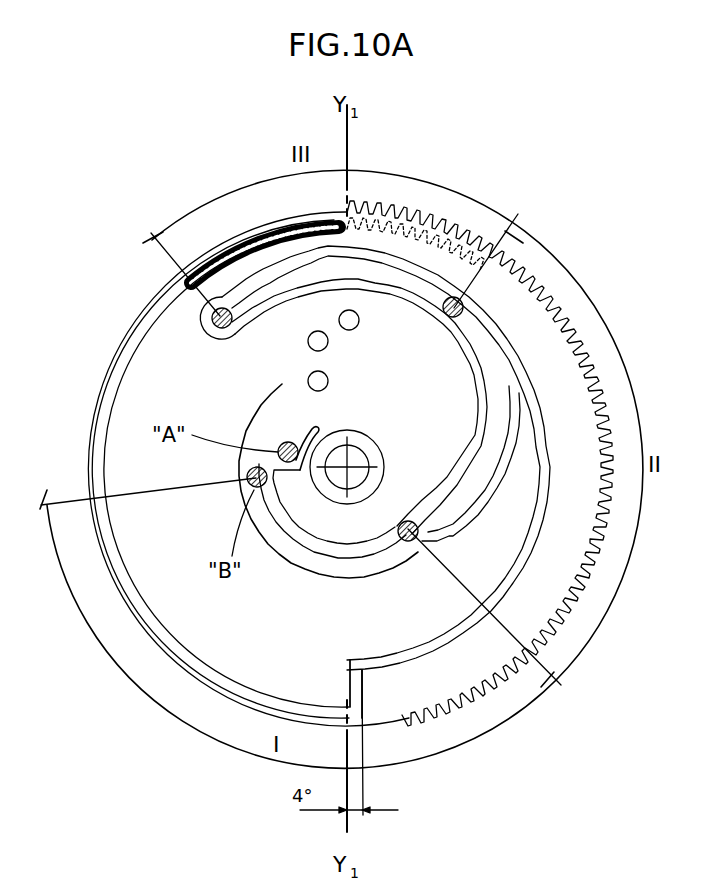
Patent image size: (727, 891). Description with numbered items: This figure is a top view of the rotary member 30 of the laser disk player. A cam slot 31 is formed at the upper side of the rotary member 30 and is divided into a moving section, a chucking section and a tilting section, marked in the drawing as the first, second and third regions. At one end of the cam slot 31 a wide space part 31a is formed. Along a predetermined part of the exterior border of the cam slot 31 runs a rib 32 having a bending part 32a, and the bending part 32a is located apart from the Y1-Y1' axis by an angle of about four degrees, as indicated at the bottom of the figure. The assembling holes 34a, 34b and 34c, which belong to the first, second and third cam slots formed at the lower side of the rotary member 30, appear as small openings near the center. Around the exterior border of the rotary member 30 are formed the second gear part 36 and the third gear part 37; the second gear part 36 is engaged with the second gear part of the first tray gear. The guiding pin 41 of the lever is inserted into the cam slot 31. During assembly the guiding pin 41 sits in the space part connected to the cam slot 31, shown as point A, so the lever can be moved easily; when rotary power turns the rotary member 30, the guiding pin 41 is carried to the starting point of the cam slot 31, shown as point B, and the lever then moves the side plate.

The rotary member 30 is at (128, 312).
The cam slot 31 is at (463, 490).
The wide space part 31a is at (283, 418).
The rib 32 is at (233, 680).
The bending part 32a is at (363, 688).
The assembling hole 34a is at (328, 384).
The assembling hole 34b is at (328, 345).
The assembling hole 34c is at (359, 323).
The second gear part 36 is at (573, 332).
The third gear part 37 is at (232, 242).
The guiding pin 41 is at (406, 543).